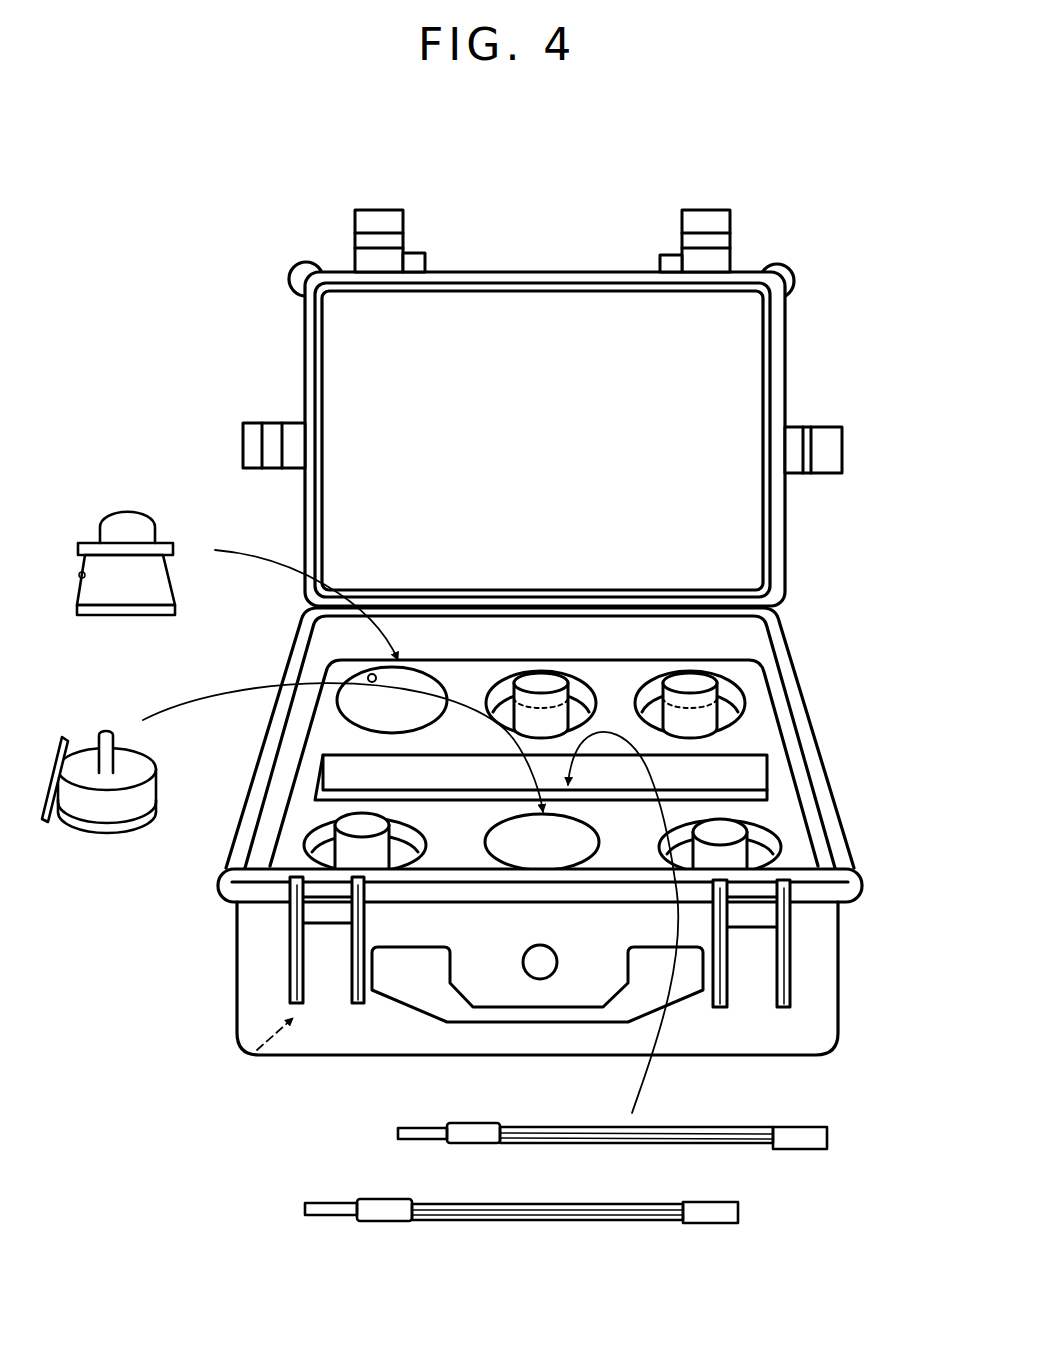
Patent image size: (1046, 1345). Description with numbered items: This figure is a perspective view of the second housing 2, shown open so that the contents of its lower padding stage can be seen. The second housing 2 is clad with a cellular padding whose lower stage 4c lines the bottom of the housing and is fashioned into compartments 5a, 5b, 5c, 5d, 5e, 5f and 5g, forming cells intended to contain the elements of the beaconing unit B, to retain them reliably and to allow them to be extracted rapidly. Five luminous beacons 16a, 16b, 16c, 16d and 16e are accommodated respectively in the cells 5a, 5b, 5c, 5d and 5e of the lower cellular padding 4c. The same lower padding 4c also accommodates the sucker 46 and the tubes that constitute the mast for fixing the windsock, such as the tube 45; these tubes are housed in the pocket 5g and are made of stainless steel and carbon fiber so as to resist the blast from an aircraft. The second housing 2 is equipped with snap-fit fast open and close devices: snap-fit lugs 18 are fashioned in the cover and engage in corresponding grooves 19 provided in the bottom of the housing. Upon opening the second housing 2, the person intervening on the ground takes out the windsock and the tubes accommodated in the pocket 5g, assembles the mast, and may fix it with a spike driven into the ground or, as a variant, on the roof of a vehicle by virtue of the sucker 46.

The second housing 2 is at (847, 1048).
The lower cellular padding 4c is at (757, 738).
The cell 5a is at (372, 675).
The cell 5b is at (583, 673).
The cell 5c is at (728, 680).
The cell 5d is at (318, 830).
The cell 5e is at (768, 842).
The compartment 5f is at (508, 855).
The pocket 5g is at (760, 757).
The luminous beacon 16a is at (132, 585).
The luminous beacon 16b is at (548, 683).
The luminous beacon 16c is at (692, 677).
The luminous beacon 16d is at (362, 822).
The luminous beacon 16e is at (727, 830).
The snap-fit lugs 18 is at (393, 221).
The grooves 19 is at (323, 910).
The tube 45 is at (398, 1130).
The sucker 46 is at (93, 820).
The beaconing unit B is at (248, 1057).